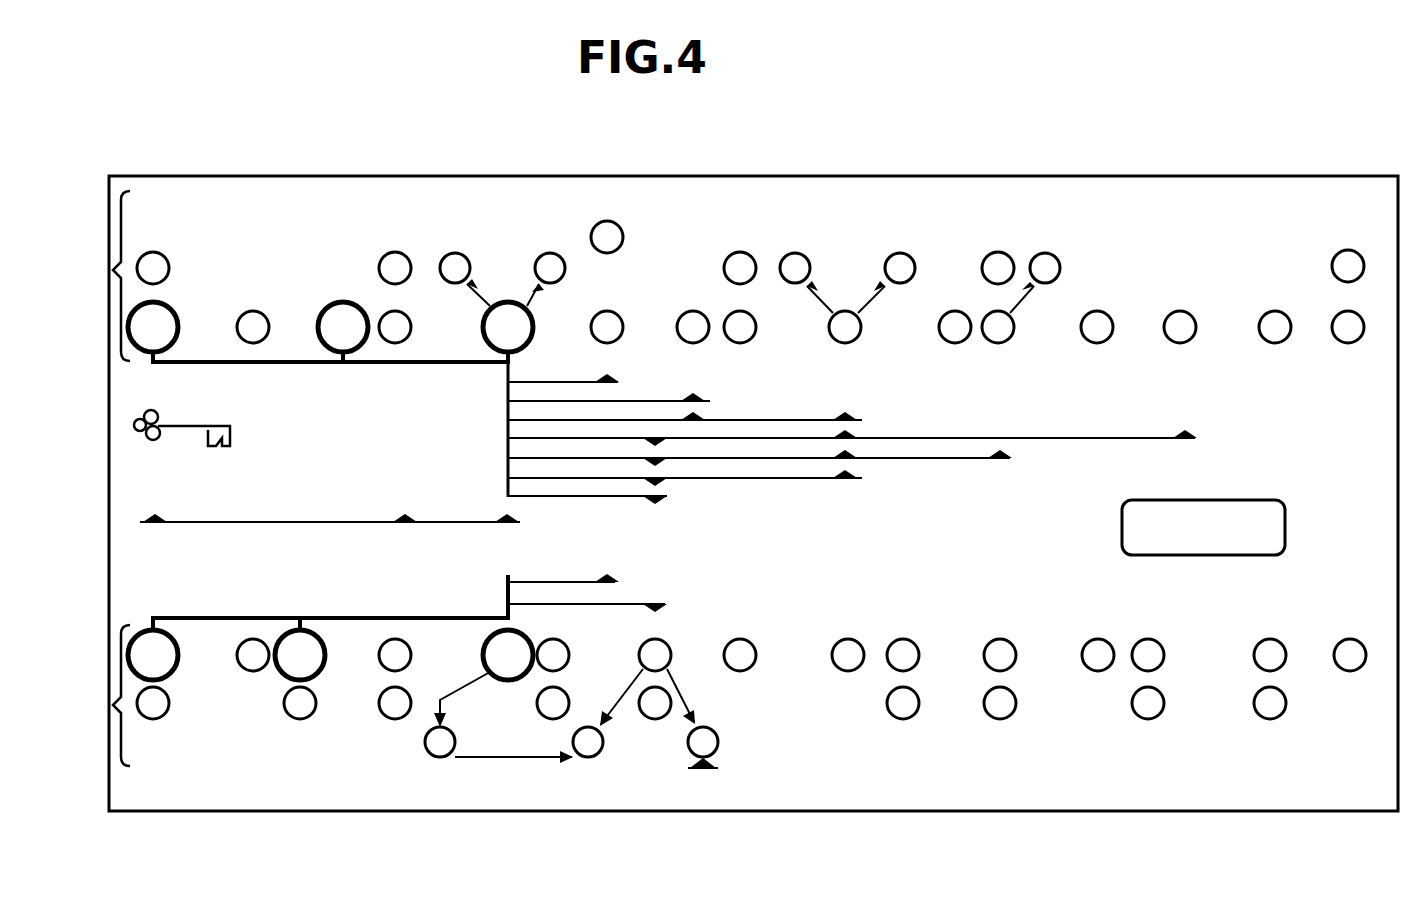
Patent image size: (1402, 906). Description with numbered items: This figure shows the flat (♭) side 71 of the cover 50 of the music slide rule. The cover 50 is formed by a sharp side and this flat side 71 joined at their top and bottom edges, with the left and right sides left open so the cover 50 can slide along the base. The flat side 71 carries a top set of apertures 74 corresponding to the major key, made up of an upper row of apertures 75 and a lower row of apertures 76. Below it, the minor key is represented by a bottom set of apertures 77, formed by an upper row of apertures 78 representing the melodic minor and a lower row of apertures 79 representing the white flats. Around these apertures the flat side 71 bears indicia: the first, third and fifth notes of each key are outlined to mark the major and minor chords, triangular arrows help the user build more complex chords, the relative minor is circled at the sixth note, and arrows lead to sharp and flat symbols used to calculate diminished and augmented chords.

The cover 50 is at (1280, 106).
The flat side 71 is at (1084, 176).
The top set of apertures 74 is at (679, 363).
The upper row of apertures 75 is at (1331, 268).
The lower row of apertures 76 is at (1352, 344).
The bottom set of apertures 77 is at (696, 687).
The upper row of apertures 78 is at (1351, 638).
The lower row of apertures 79 is at (1287, 703).